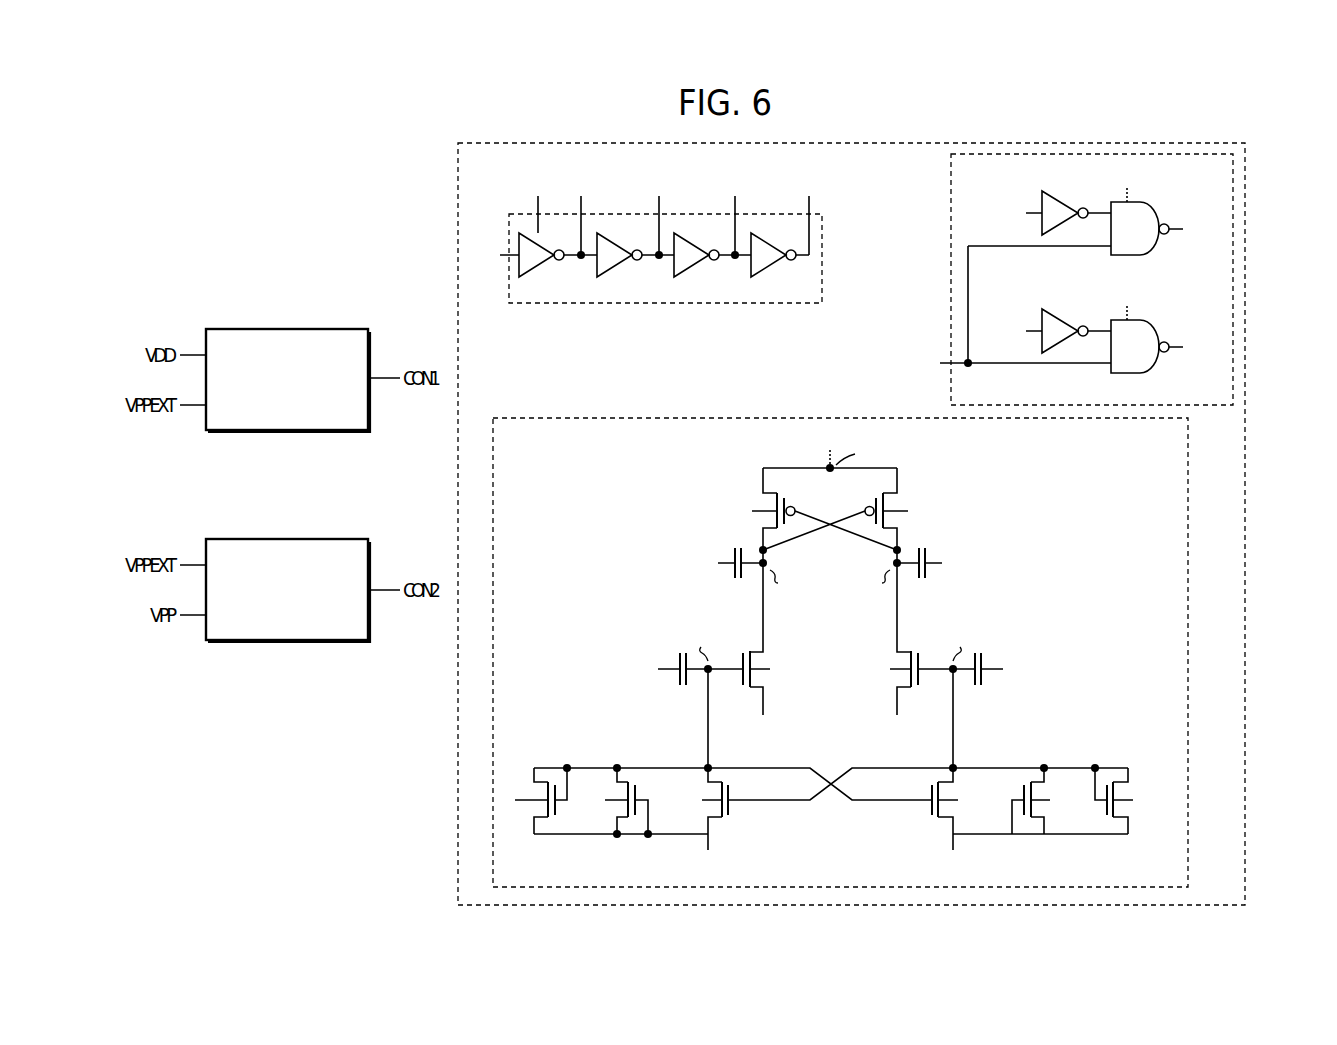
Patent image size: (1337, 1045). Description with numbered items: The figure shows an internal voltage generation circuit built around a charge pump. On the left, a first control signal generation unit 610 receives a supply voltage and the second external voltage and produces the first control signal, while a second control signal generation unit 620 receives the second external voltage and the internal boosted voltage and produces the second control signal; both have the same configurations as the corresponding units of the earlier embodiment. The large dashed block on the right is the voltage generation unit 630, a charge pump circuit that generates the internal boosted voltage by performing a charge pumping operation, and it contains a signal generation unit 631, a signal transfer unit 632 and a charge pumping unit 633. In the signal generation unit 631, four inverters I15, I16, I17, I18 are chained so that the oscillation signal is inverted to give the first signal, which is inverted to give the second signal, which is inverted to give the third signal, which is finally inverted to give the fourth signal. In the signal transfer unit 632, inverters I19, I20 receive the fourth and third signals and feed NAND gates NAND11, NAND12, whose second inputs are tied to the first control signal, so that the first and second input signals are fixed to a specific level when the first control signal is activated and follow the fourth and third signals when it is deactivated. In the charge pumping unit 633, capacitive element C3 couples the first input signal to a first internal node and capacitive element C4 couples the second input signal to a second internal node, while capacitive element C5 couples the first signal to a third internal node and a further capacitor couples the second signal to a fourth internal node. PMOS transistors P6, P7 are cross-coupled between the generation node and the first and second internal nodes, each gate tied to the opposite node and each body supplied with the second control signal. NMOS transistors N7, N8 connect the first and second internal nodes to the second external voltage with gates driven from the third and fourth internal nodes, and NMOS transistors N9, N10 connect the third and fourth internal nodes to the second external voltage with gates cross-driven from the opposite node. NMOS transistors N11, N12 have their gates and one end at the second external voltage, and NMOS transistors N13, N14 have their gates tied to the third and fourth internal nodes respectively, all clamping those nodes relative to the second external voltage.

The first control signal generation unit 610 is at (288, 328).
The second control signal generation unit 620 is at (288, 538).
The voltage generation unit 630 is at (1245, 500).
The signal generation unit 631 is at (822, 263).
The signal transfer unit 632 is at (1233, 340).
The charge pumping unit 633 is at (727, 418).
The inverter I15 is at (540, 268).
The inverter I16 is at (618, 268).
The inverter I17 is at (695, 268).
The inverter I18 is at (772, 268).
The inverter I19 is at (1061, 201).
The inverter I20 is at (1061, 319).
The NAND gate NAND11 is at (1151, 252).
The NAND gate NAND12 is at (1151, 370).
The PMOS transistor P6 is at (757, 498).
The PMOS transistor P7 is at (903, 498).
The capacitive element C3 is at (739, 583).
The capacitive element C4 is at (923, 583).
The capacitive element C5 is at (683, 688).
The NMOS transistor N7 is at (768, 689).
The NMOS transistor N8 is at (897, 682).
The NMOS transistor N9 is at (738, 810).
The NMOS transistor N10 is at (926, 811).
The NMOS transistor N11 is at (648, 795).
The NMOS transistor N12 is at (1011, 795).
The NMOS transistor N13 is at (567, 807).
The NMOS transistor N14 is at (1094, 808).